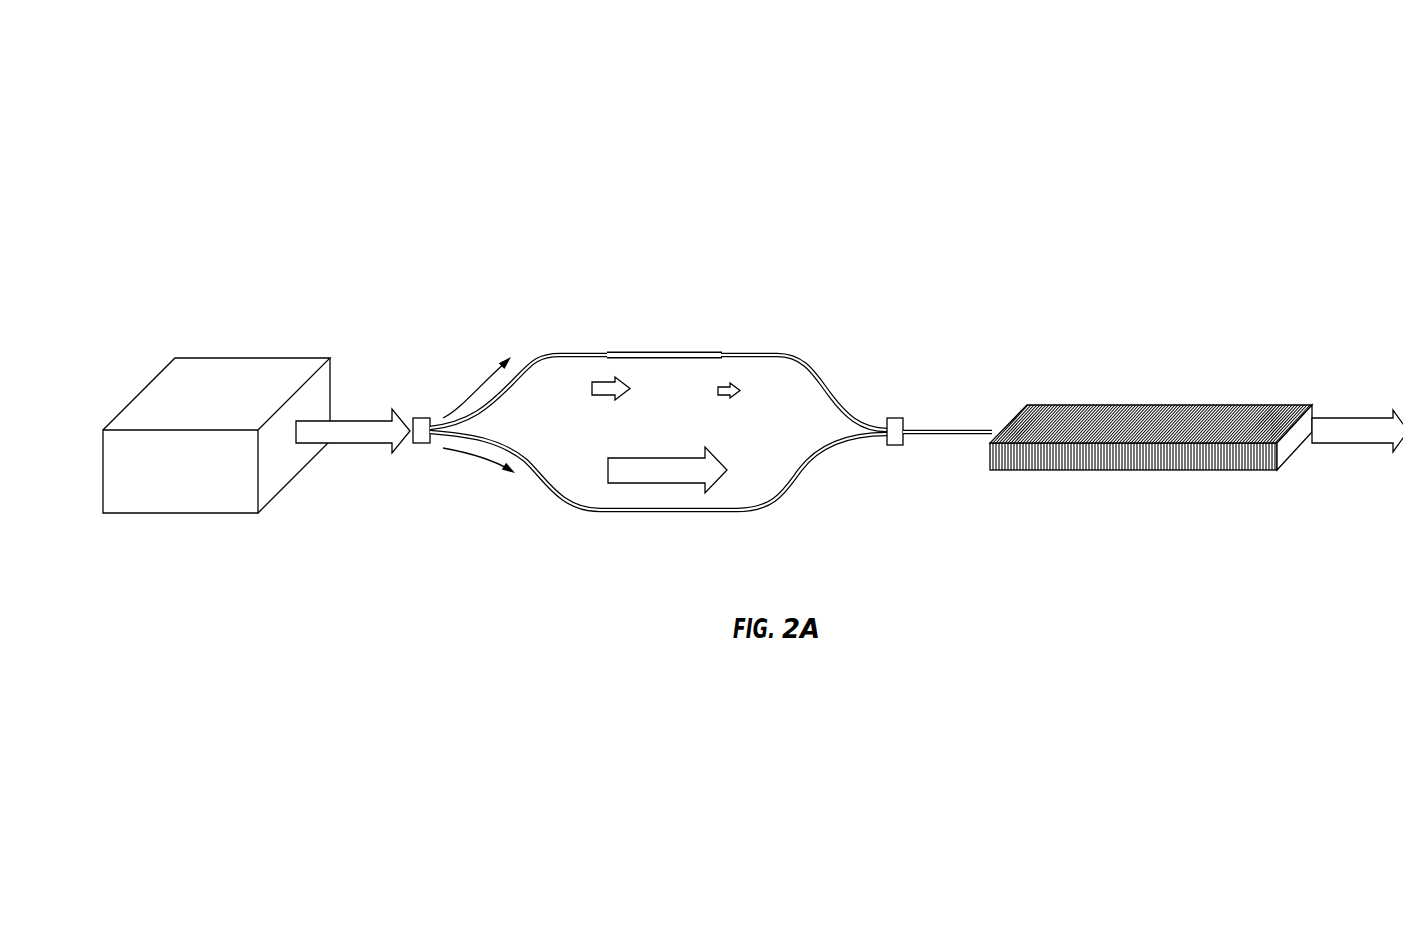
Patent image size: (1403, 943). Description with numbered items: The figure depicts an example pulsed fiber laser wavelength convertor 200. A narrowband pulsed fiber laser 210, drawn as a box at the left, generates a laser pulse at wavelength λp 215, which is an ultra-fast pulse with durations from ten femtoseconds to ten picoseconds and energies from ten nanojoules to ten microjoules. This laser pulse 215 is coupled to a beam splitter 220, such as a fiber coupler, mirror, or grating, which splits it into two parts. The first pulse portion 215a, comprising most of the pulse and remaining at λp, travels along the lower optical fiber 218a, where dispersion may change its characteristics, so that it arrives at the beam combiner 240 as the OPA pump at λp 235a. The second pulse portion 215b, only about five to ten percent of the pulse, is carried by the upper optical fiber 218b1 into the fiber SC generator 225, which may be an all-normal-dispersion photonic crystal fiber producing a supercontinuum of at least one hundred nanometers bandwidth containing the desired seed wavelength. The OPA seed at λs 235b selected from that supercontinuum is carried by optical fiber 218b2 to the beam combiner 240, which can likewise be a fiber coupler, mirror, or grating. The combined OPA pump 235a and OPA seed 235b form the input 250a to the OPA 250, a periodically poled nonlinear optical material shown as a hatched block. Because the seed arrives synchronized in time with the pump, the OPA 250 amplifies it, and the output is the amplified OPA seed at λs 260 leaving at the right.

The pulsed fiber laser wavelength convertor 200 is at (1032, 152).
The narrowband pulsed fiber laser 210 is at (222, 375).
The laser pulse at wavelength λp 215 is at (355, 478).
The first pulse portion 215a is at (479, 478).
The second pulse portion 215b is at (473, 385).
The optical fiber 218a is at (658, 512).
The optical fiber 218b1 is at (557, 352).
The optical fiber 218b2 is at (778, 352).
The beam splitter 220 is at (418, 418).
The fiber SC generator 225 is at (685, 354).
The OPA pump at λp 235a is at (774, 485).
The OPA seed at λs 235b is at (767, 382).
The beam combiner 240 is at (903, 427).
The OPA 250 is at (1160, 405).
The input to the OPA 250a is at (998, 430).
The amplified OPA seed at λs 260 is at (1340, 502).